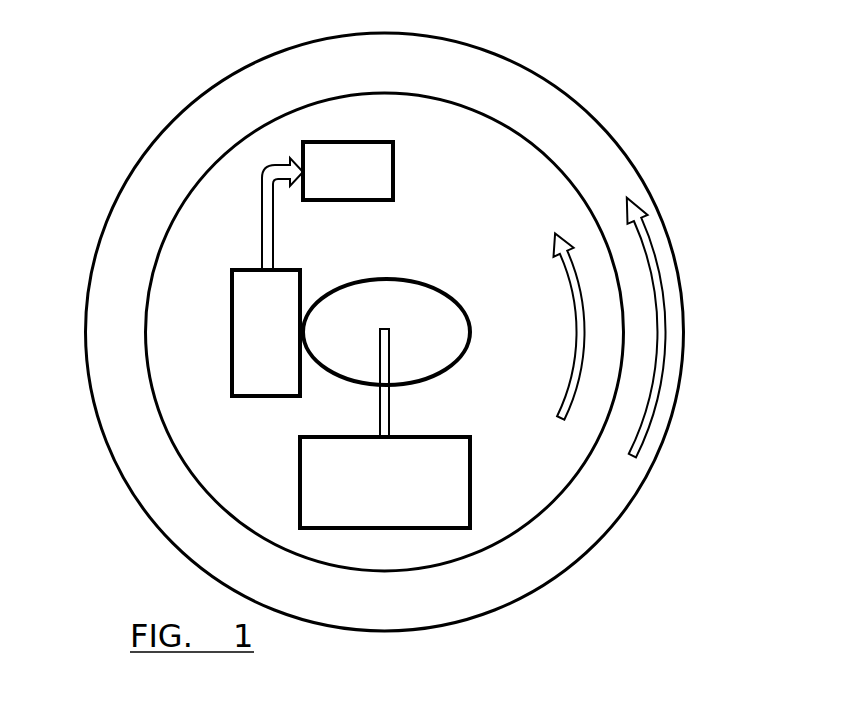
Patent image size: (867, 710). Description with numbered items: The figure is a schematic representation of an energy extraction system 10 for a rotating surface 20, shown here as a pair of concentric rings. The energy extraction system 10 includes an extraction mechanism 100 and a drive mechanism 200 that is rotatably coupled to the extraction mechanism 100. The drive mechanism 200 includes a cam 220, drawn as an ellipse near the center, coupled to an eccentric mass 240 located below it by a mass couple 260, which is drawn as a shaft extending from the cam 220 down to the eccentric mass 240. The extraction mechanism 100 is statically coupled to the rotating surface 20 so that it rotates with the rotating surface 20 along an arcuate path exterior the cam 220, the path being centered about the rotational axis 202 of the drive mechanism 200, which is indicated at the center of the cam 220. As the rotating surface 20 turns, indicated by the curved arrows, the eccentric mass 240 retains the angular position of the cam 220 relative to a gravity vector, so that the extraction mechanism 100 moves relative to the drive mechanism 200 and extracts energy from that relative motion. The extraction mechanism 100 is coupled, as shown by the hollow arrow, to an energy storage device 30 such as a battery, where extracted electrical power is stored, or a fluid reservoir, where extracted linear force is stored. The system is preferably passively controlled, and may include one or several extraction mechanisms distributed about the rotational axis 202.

The energy extraction system 10 is at (450, 117).
The rotating surface 20 is at (537, 100).
The energy storage device 30 is at (320, 140).
The extraction mechanism 100 is at (250, 353).
The drive mechanism 200 is at (485, 314).
The rotational axis 202 is at (387, 327).
The cam 220 is at (440, 350).
The eccentric mass 240 is at (455, 487).
The mass couple 260 is at (392, 410).